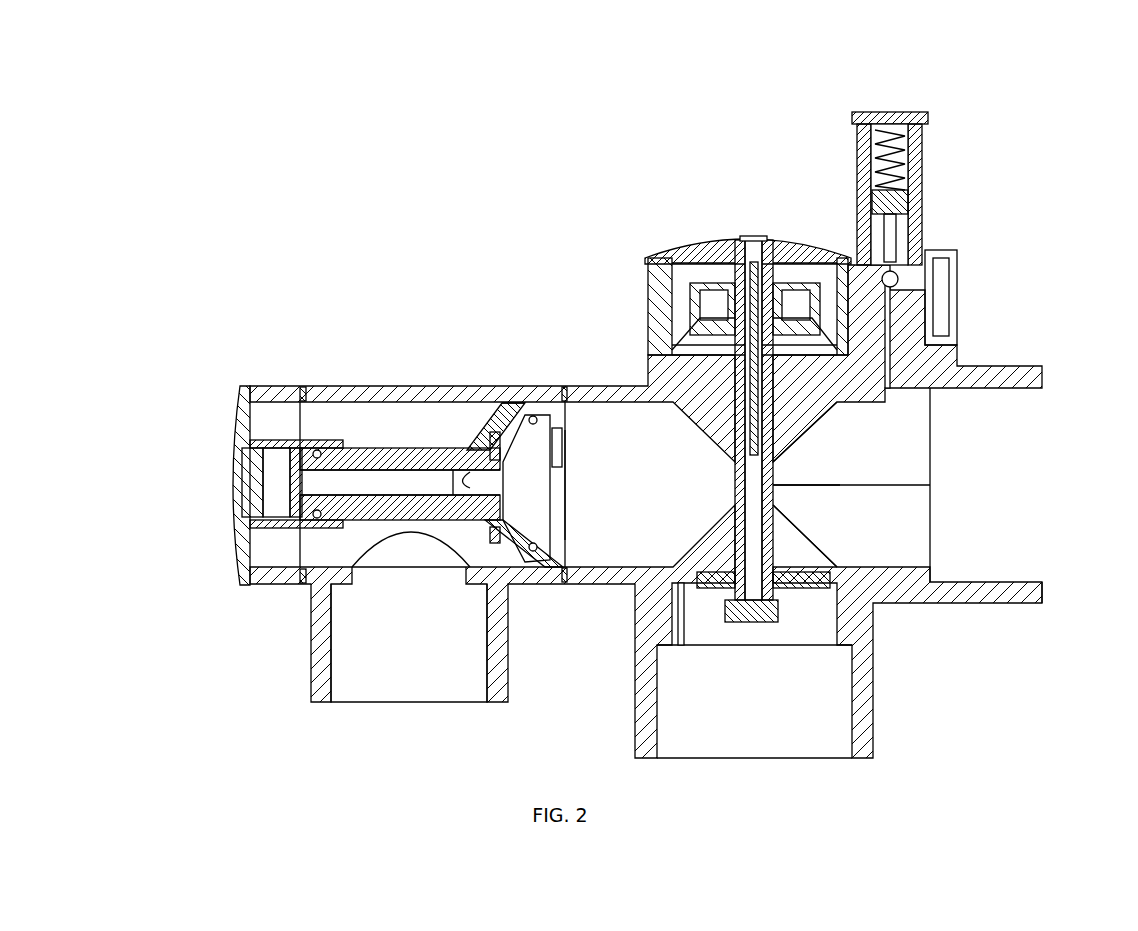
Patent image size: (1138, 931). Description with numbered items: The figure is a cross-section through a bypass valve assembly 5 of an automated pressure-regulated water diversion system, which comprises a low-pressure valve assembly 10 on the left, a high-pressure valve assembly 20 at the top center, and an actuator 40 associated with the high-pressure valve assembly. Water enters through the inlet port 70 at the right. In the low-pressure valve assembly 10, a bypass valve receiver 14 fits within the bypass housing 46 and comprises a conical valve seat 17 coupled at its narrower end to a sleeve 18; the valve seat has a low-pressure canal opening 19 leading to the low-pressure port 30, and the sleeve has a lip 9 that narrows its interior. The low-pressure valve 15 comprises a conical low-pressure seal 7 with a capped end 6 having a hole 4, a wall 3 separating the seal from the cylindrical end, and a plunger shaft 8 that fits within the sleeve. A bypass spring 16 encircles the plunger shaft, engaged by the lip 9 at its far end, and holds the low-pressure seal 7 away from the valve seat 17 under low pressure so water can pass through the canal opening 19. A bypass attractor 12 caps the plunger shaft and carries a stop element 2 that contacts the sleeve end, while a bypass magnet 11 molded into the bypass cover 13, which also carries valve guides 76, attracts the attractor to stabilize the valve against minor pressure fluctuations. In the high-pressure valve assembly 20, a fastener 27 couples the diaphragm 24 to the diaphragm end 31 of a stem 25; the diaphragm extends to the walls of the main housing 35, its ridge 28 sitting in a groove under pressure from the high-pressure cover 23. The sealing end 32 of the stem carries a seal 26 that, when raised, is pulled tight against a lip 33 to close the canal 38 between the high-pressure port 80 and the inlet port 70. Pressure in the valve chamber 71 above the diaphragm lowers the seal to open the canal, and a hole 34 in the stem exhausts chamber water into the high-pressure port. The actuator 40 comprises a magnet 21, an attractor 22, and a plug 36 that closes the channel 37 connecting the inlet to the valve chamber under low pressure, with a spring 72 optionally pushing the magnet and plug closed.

The stop element 2 is at (297, 451).
The wall 3 is at (447, 520).
The hole 4 is at (560, 450).
The bypass valve assembly 5 is at (462, 138).
The capped end 6 is at (567, 500).
The low-pressure seal 7 is at (556, 445).
The plunger shaft 8 is at (320, 520).
The lip 9 is at (435, 452).
The low-pressure valve assembly 10 is at (382, 372).
The bypass magnet 11 is at (252, 478).
The bypass attractor 12 is at (285, 505).
The bypass cover 13 is at (250, 389).
The bypass valve receiver 14 is at (458, 445).
The low-pressure valve 15 is at (548, 510).
The bypass spring 16 is at (470, 440).
The conical valve seat 17 is at (512, 410).
The sleeve 18 is at (380, 518).
The low-pressure canal opening 19 is at (497, 535).
The high-pressure valve assembly 20 is at (747, 215).
The magnet 21 is at (900, 205).
The attractor 22 is at (906, 246).
The high-pressure cover 23 is at (703, 243).
The diaphragm 24 is at (683, 318).
The stem 25 is at (776, 470).
The seal 26 is at (822, 582).
The fastener 27 is at (813, 287).
The ridge 28 is at (672, 352).
The low-pressure port 30 is at (357, 668).
The diaphragm end 31 is at (777, 346).
The sealing end 32 is at (774, 557).
The lip 33 is at (681, 585).
The hole 34 is at (754, 584).
The main housing 35 is at (1043, 598).
The plug 36 is at (897, 283).
The channel 37 is at (891, 328).
The canal 38 is at (800, 558).
The actuator 40 is at (928, 178).
The bypass housing 46 is at (484, 440).
The inlet port 70 is at (1025, 437).
The valve chamber 71 is at (695, 275).
The spring 72 is at (883, 150).
The valve guides 76 is at (286, 445).
The high-pressure port 80 is at (776, 722).